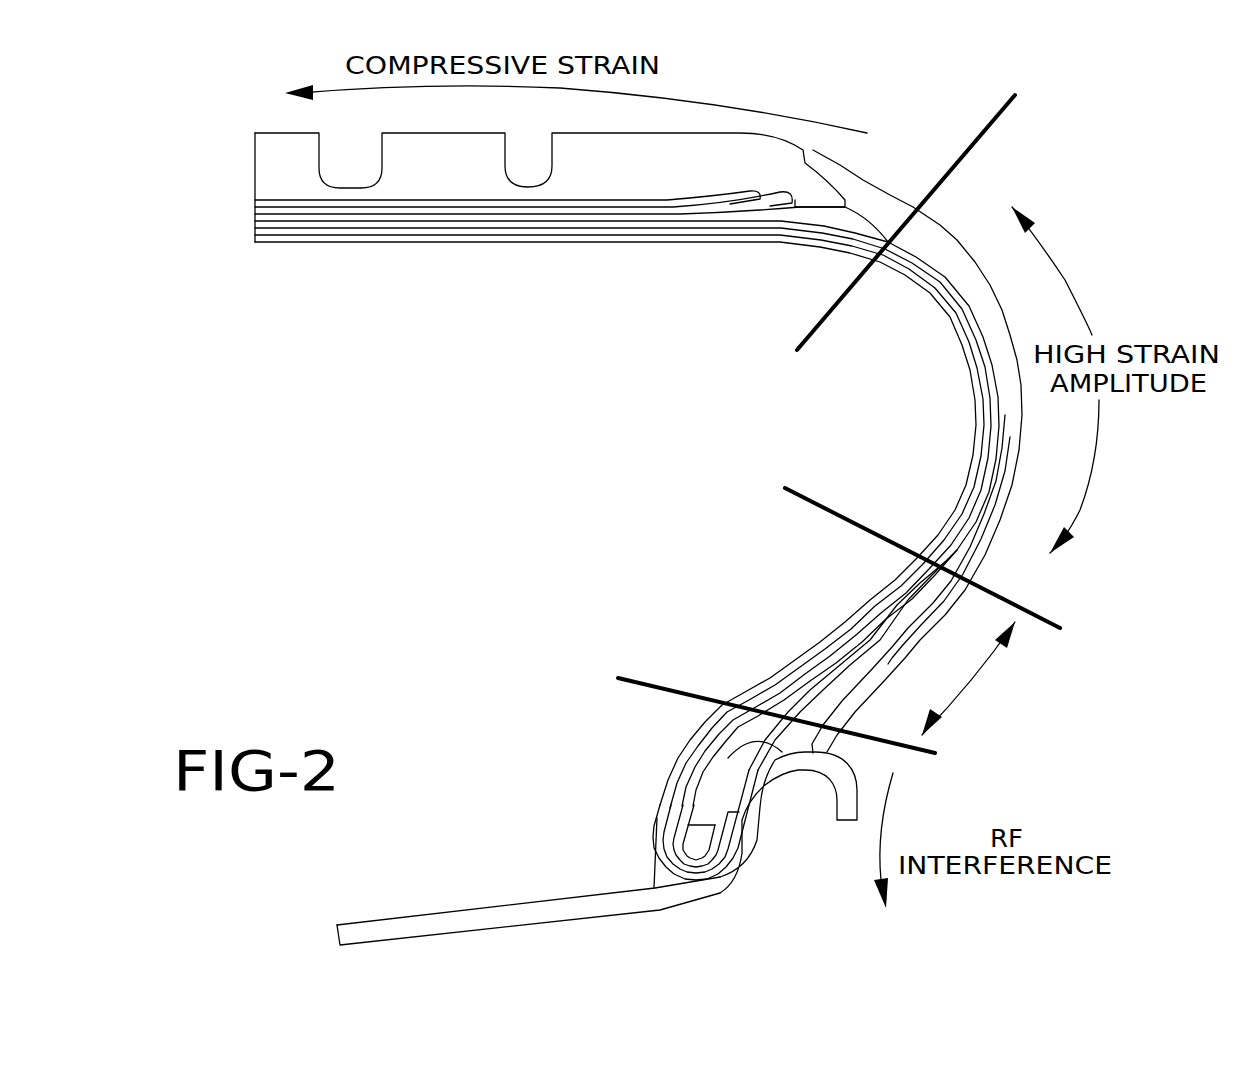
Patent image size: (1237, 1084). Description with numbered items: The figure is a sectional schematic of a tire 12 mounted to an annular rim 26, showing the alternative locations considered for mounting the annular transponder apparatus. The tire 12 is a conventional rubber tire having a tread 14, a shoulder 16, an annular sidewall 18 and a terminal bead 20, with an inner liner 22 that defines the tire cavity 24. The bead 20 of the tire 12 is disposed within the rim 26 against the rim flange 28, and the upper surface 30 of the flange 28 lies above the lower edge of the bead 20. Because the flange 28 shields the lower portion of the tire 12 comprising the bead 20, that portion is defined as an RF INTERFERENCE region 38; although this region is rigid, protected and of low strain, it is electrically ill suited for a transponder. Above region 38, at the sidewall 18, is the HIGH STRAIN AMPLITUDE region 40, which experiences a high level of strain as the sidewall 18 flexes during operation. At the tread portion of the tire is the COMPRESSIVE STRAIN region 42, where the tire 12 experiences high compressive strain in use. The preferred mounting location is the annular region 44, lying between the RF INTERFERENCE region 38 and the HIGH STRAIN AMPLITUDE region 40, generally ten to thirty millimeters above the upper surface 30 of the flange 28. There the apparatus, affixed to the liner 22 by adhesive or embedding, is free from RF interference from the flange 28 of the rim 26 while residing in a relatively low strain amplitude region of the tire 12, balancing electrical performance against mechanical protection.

The tire 12 is at (1172, 160).
The tread 14 is at (278, 157).
The shoulder 16 is at (887, 217).
The annular sidewall 18 is at (1023, 423).
The terminal bead 20 is at (697, 842).
The inner liner 22 is at (977, 370).
The tire cavity 24 is at (655, 505).
The annular rim 26 is at (455, 918).
The rim flange 28 is at (763, 838).
The upper surface of the flange 30 is at (753, 733).
The RF INTERFERENCE region 38 is at (892, 802).
The HIGH STRAIN AMPLITUDE region 40 is at (1098, 443).
The COMPRESSIVE STRAIN region 42 is at (730, 103).
The apparatus mounting region 44 is at (985, 676).